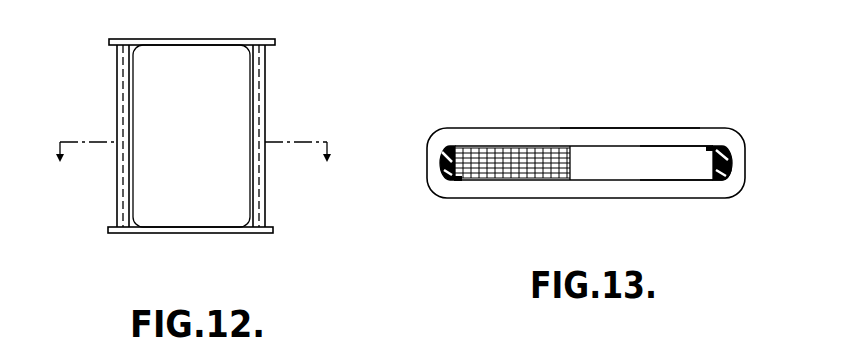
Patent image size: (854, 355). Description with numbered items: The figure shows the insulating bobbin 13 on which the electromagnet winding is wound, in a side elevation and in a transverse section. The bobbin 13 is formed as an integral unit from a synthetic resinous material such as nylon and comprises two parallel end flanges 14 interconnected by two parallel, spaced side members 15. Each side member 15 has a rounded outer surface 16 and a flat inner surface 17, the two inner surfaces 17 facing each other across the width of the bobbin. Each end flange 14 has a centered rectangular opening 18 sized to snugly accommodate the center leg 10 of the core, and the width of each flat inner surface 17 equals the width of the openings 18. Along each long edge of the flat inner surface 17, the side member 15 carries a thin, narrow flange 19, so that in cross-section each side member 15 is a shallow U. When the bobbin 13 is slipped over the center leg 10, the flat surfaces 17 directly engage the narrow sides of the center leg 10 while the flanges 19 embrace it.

In FIG. 13, the center leg 10 is at (569, 165).
In FIG. 12, the bobbin 13 is at (80, 256).
In FIG. 13, the bobbin 13 is at (559, 127).
In FIG. 12, the end flange 14 is at (208, 47).
In FIG. 13, the end flange 14 is at (622, 128).
In FIG. 12, the side member 15 is at (122, 101).
In FIG. 13, the side member 15 is at (442, 158).
In FIG. 13, the rounded outer surface 16 is at (724, 178).
In FIG. 13, the flat inner surface 17 is at (676, 163).
In FIG. 13, the rectangular opening 18 is at (630, 180).
In FIG. 12, the flange 19 is at (131, 88).
In FIG. 13, the flange 19 is at (708, 147).